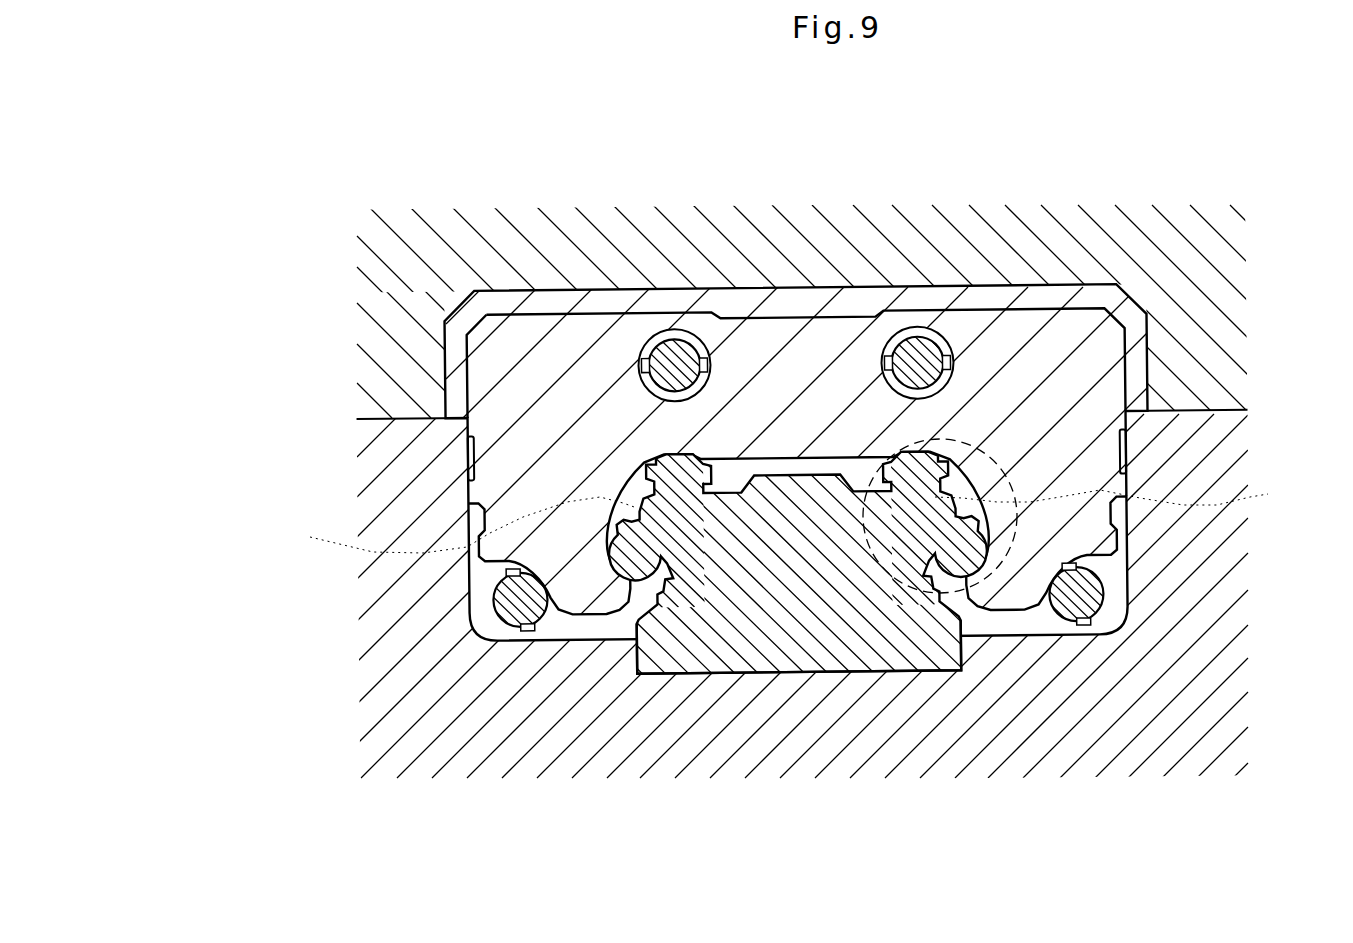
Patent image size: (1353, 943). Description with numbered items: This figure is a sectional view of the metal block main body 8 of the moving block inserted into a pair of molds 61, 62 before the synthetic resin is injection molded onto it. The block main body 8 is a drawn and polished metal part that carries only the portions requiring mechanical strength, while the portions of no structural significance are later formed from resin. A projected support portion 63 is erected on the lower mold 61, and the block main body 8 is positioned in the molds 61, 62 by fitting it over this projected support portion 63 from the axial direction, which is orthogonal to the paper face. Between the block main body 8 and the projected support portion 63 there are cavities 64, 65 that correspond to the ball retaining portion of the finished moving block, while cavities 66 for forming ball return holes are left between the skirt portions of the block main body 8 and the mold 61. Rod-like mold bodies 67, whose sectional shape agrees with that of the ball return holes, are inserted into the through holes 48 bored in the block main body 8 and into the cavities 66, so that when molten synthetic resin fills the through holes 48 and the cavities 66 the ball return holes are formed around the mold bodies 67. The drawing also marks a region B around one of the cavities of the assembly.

The block main body 8 is at (745, 300).
The through holes 48 is at (656, 341).
The mold 61 is at (758, 743).
The mold 62 is at (845, 224).
The projected support portion 63 is at (850, 647).
The cavity 64 is at (783, 466).
The cavity 65 is at (787, 518).
The cavities 66 is at (567, 630).
The rod-like mold bodies 67 is at (670, 357).
The load region B is at (975, 593).